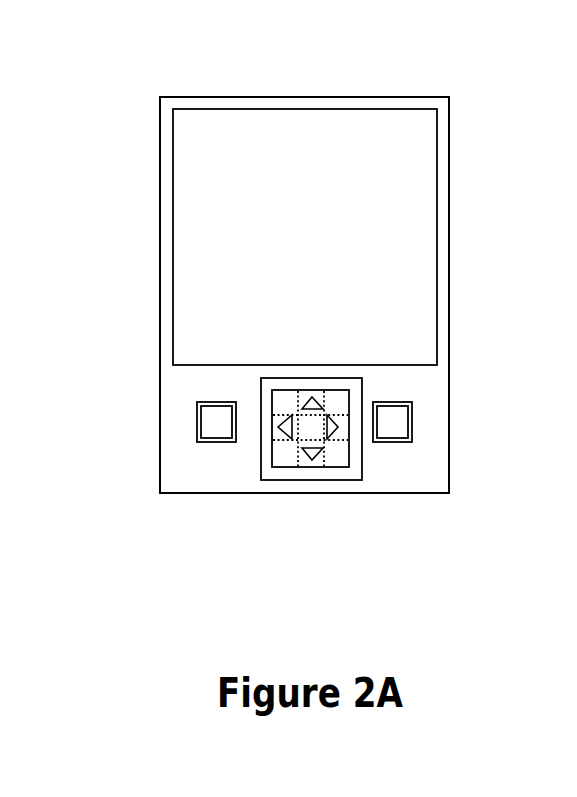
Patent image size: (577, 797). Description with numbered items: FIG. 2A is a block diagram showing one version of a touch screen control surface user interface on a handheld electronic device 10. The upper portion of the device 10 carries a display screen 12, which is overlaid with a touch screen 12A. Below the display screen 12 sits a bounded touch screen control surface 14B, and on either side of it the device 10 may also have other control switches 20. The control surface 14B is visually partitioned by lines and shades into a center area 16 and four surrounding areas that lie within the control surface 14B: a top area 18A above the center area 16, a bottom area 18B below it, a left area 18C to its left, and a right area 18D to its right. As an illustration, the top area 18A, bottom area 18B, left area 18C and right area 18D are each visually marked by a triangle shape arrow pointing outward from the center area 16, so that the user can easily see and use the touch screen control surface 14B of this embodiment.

The handheld electronic device 10 is at (248, 97).
The display screen 12 is at (210, 212).
The touch screen 12A is at (251, 237).
The bounded touch screen control surface 14B is at (329, 445).
The center area 16 is at (373, 445).
The top area 18A is at (314, 402).
The bottom area 18B is at (311, 458).
The left area 18C is at (293, 437).
The right area 18D is at (327, 425).
The control switches 20 is at (210, 416).